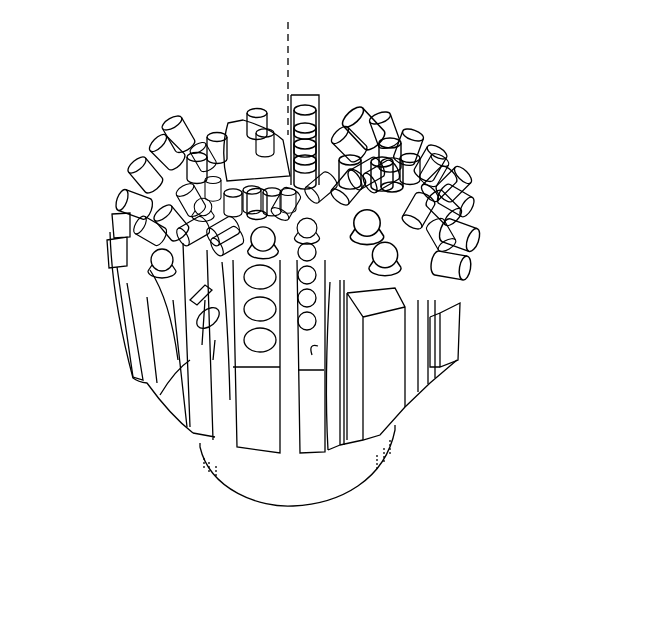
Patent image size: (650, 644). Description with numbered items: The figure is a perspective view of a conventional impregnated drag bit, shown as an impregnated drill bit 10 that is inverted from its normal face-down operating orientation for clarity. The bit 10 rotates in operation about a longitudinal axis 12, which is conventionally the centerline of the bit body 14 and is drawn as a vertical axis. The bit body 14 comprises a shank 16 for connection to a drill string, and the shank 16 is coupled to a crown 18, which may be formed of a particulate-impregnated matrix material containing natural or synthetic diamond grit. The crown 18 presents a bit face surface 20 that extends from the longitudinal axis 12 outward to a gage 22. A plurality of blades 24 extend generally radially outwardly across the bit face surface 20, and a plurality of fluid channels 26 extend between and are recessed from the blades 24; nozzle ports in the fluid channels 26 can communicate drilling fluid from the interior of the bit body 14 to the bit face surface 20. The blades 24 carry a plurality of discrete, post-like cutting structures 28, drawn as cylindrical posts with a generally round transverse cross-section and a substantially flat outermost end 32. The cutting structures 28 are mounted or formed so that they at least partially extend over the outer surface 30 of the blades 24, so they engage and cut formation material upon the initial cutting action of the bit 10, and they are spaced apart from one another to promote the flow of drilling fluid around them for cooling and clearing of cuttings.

The impregnated drill bit 10 is at (514, 210).
The longitudinal axis 12 is at (288, 30).
The bit body 14 is at (460, 303).
The shank 16 is at (283, 480).
The crown 18 is at (447, 372).
The bit face surface 20 is at (402, 112).
The gage 22 is at (380, 368).
The blades 24 is at (197, 360).
The fluid channels 26 is at (197, 377).
The cutting structures 28 is at (135, 192).
The outer surface 30 is at (312, 355).
The outermost end 32 is at (393, 273).